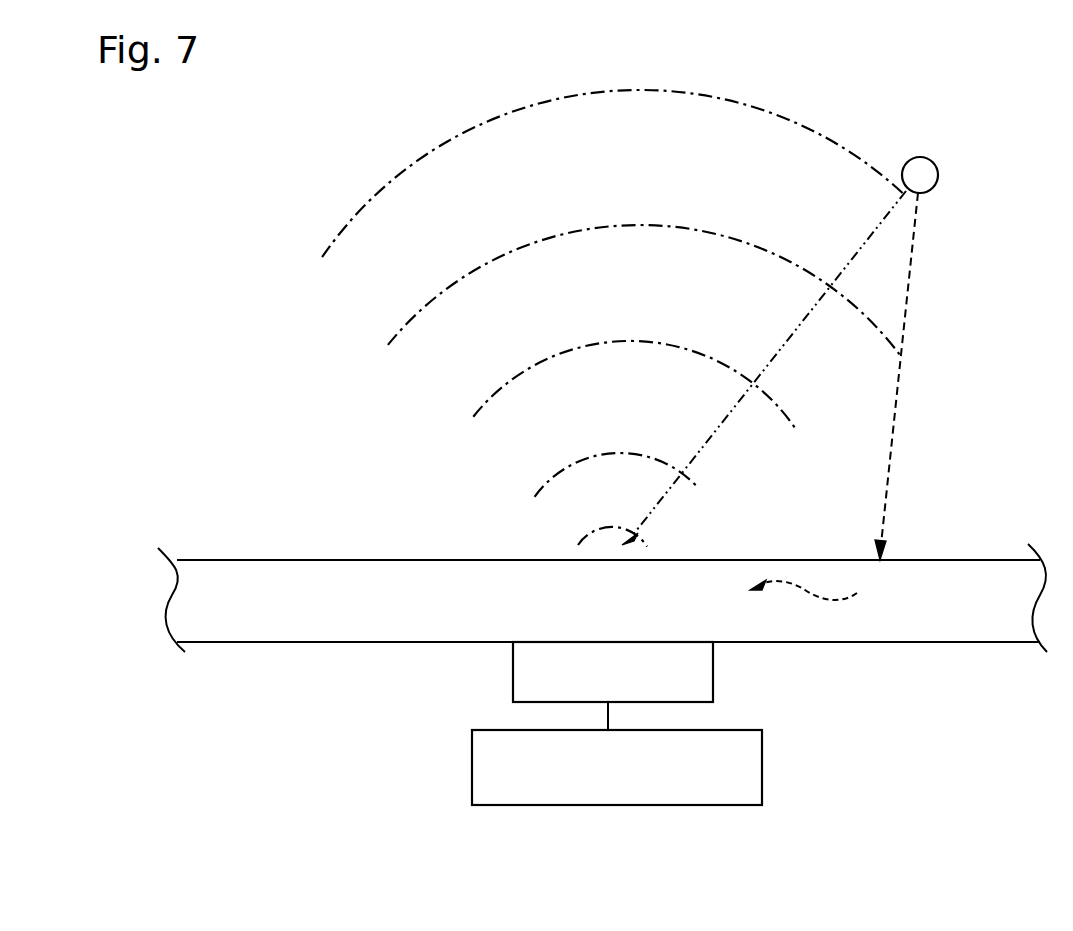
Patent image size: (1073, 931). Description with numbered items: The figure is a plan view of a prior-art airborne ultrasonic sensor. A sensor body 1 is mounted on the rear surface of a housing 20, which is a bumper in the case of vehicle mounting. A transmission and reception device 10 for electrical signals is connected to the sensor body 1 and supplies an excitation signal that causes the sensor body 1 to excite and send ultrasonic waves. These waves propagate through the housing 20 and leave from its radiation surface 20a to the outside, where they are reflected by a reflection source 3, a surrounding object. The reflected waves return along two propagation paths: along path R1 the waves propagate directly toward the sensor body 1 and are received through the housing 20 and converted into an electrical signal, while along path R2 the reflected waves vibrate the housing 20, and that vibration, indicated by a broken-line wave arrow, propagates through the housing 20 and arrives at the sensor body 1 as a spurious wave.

The reflection source 3 is at (928, 159).
The path R1 is at (775, 350).
The path R2 is at (890, 443).
The radiation surface 20a is at (592, 558).
The housing 20 is at (286, 628).
The sensor body 1 is at (713, 665).
The transmission and reception device 10 is at (762, 770).